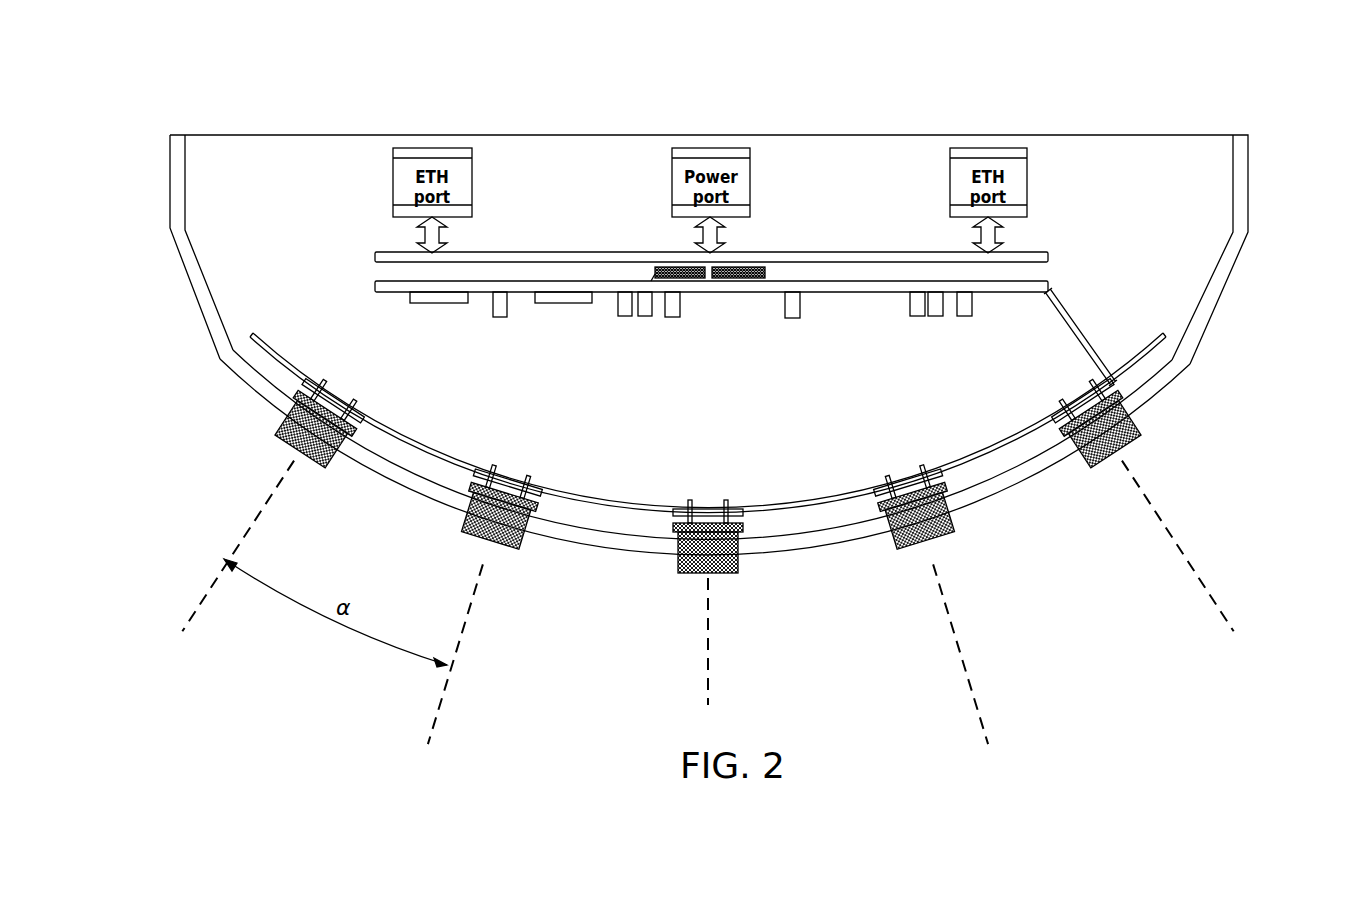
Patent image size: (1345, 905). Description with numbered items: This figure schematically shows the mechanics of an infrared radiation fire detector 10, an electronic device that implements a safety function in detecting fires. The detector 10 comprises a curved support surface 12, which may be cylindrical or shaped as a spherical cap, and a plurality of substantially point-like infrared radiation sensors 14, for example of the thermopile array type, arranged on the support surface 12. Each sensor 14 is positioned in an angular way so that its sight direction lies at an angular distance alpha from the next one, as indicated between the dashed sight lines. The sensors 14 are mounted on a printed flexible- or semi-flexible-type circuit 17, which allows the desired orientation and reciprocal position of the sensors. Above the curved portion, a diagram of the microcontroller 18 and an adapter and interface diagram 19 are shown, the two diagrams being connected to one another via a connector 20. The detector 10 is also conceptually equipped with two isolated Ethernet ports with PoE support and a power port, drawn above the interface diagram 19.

The infrared radiation fire detector 10 is at (745, 368).
The curved support surface 12 is at (1010, 494).
The infrared radiation sensors 14 is at (924, 560).
The printed flexible- or semi-flexible-type circuit 17 is at (605, 503).
The microcontroller diagram 18 is at (835, 300).
The adapter and interface diagram 19 is at (852, 254).
The connector 20 is at (657, 272).